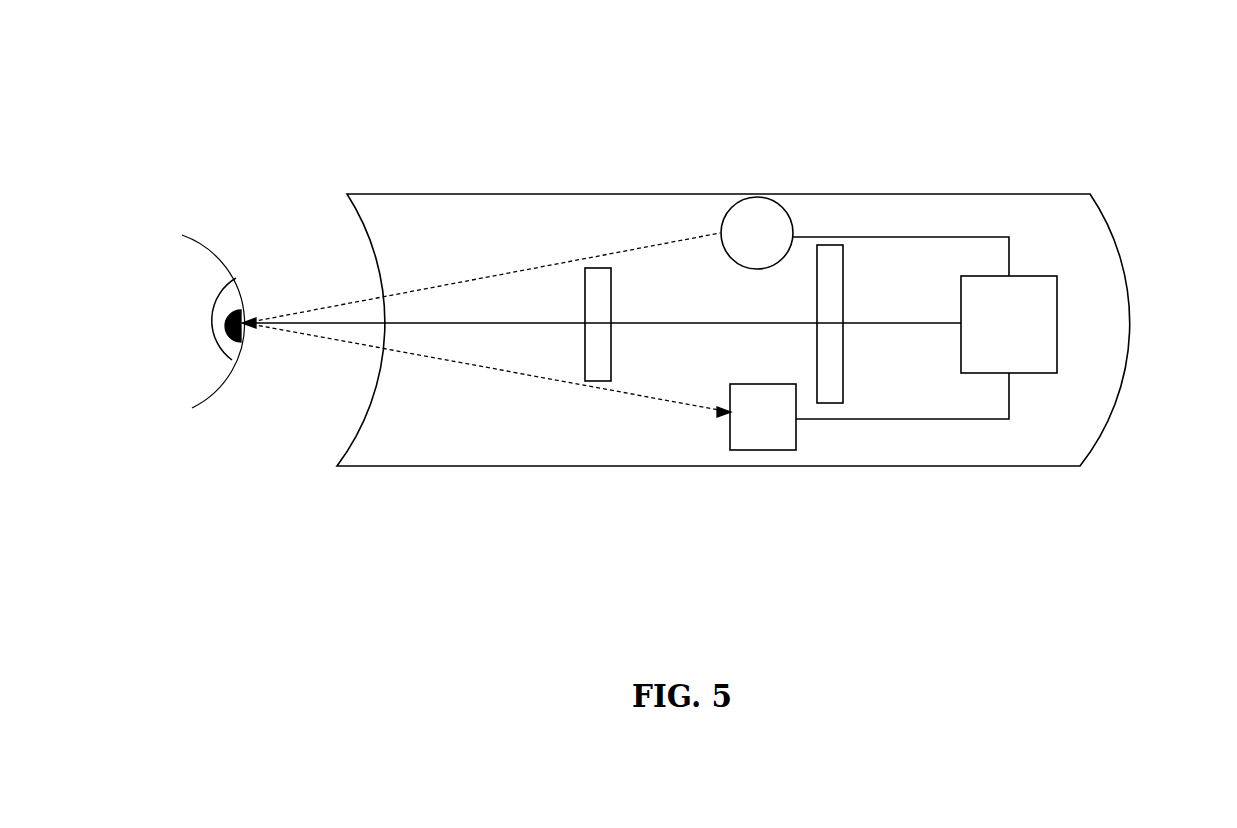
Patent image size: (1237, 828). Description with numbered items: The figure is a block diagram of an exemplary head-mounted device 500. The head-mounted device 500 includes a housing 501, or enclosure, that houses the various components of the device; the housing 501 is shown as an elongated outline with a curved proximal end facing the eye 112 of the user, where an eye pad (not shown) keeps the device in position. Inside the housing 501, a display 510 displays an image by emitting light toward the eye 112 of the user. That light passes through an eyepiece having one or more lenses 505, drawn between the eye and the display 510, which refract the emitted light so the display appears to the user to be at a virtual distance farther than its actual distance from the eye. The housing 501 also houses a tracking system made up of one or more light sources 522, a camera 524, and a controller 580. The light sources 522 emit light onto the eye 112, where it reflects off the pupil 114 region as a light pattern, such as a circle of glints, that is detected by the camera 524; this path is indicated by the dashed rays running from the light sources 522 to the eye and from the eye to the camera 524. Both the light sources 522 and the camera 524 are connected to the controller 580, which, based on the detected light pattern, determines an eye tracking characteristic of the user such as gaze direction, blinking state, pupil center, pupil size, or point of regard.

The head-mounted device 500 is at (408, 85).
The eye 112 is at (210, 248).
The pupil 114 is at (243, 307).
The housing 501 is at (893, 467).
The lenses 505 is at (597, 268).
The light sources 522 is at (750, 198).
The display 510 is at (842, 308).
The camera 524 is at (763, 450).
The controller 580 is at (1057, 328).